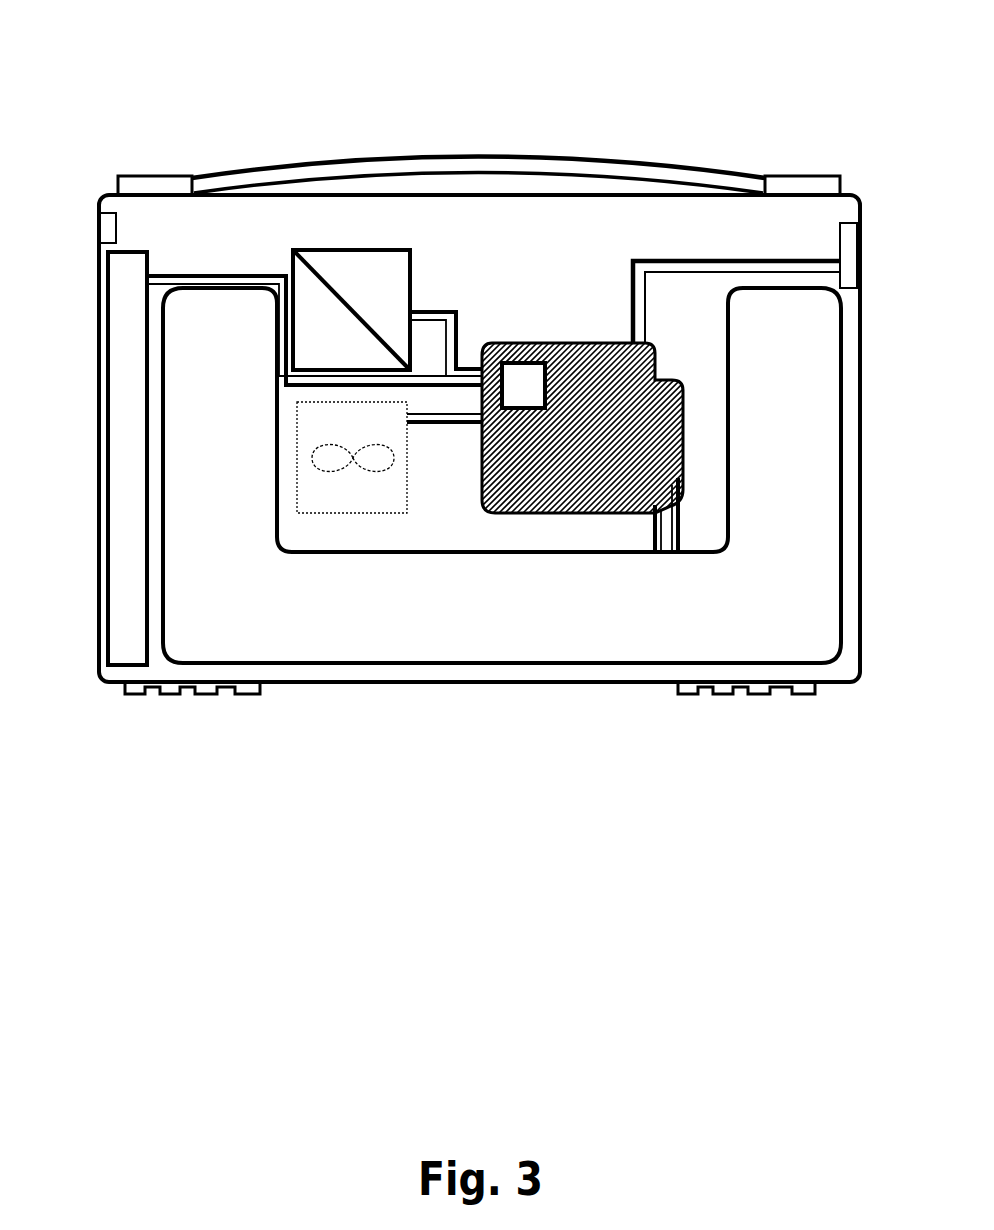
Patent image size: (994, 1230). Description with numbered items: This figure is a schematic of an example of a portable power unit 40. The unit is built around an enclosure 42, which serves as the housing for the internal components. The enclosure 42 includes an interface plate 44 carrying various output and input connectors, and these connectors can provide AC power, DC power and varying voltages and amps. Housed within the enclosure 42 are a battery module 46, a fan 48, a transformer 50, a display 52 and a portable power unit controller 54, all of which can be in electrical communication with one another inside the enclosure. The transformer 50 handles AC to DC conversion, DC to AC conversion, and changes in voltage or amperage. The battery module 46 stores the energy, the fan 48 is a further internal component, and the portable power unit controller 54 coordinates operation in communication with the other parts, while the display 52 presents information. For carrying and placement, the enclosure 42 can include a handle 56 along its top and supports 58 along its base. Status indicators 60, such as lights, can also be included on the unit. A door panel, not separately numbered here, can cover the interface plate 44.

The portable power unit 40 is at (460, 72).
The enclosure 42 is at (862, 402).
The interface plate 44 is at (128, 382).
The battery module 46 is at (162, 590).
The fan 48 is at (357, 515).
The transformer 50 is at (412, 267).
The display 52 is at (858, 244).
The portable power unit controller 54 is at (538, 345).
The handle 56 is at (594, 158).
The supports 58 is at (763, 696).
The status indicators 60 is at (98, 233).